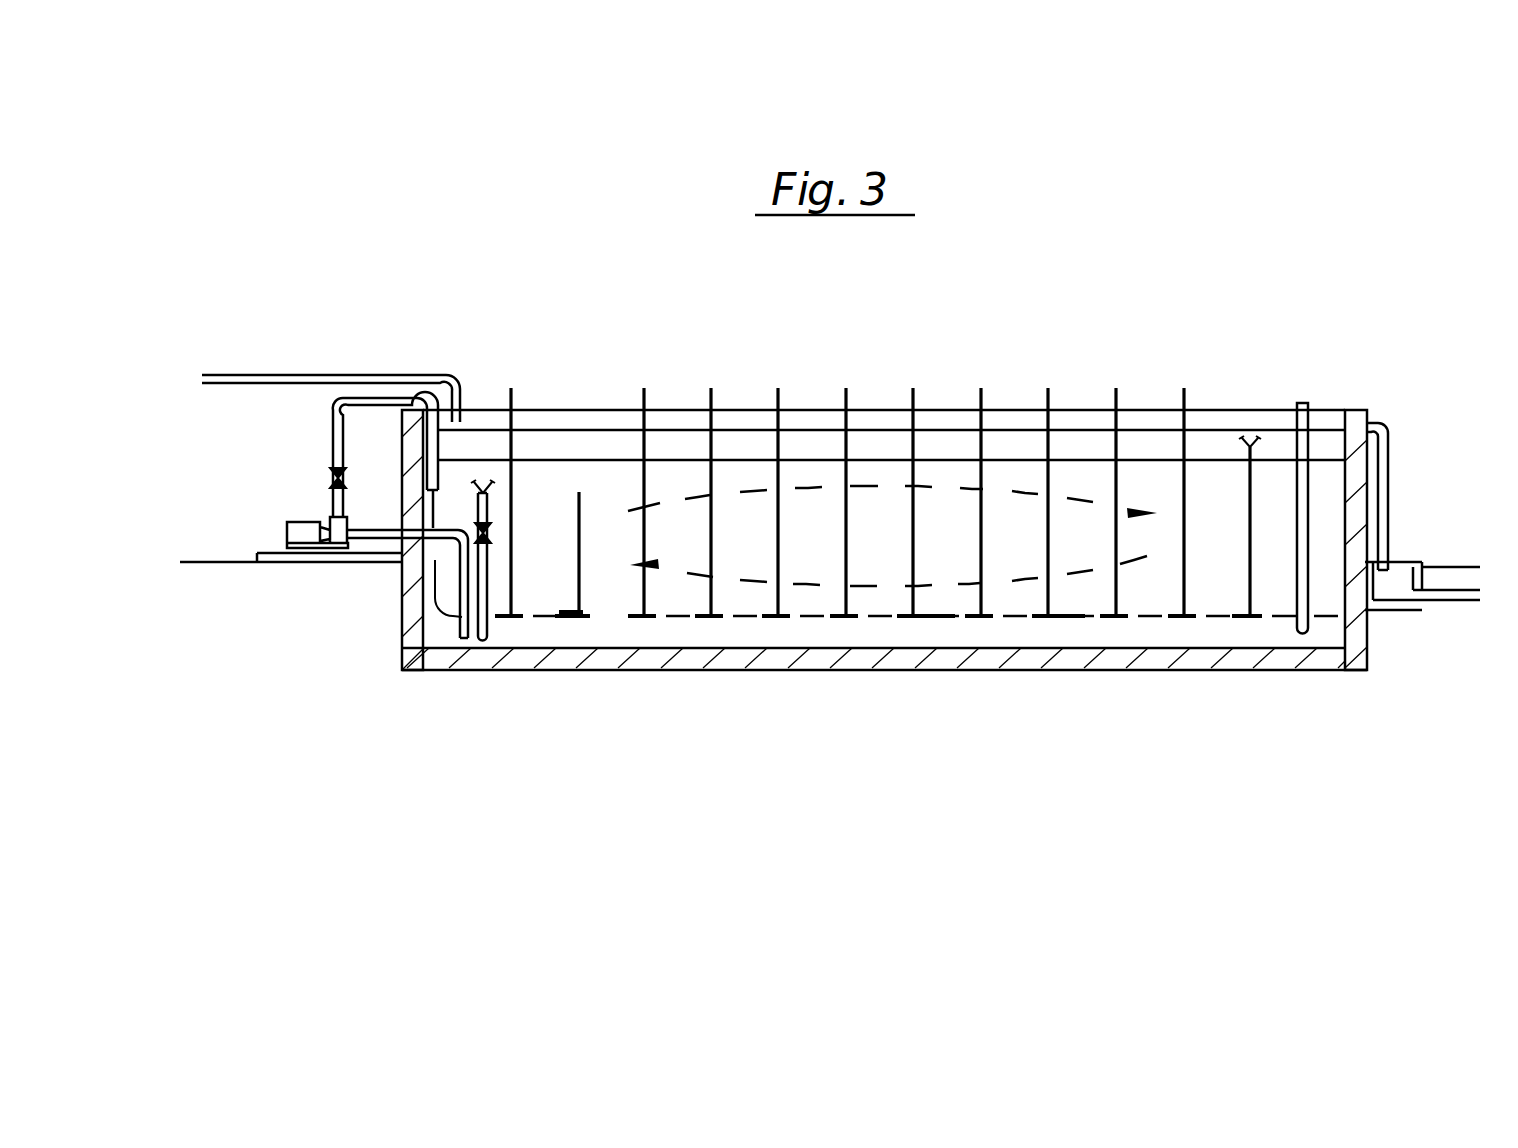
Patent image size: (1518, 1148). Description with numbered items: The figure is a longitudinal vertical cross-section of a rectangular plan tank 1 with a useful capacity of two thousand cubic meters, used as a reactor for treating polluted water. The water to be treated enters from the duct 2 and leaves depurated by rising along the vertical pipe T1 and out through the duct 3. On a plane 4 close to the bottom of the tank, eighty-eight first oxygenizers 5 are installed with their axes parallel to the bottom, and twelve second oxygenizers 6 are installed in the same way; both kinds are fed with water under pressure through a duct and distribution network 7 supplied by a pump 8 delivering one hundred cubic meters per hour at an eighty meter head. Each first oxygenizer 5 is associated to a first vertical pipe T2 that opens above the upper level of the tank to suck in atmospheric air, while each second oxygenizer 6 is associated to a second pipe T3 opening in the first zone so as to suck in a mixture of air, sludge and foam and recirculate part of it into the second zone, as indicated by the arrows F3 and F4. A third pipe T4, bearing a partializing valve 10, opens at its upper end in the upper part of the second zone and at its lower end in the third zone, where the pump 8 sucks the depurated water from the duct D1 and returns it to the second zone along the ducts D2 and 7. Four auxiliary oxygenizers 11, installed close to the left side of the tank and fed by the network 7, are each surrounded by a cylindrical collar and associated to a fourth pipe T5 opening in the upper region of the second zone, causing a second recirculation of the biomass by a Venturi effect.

The tank 1 is at (1000, 343).
The duct 2 is at (278, 373).
The duct 3 is at (1385, 457).
The plane 4 is at (1067, 617).
The first oxygenizers 5 is at (637, 617).
The second oxygenizers 6 is at (1247, 617).
The distribution network 7 is at (937, 617).
The pump 8 is at (298, 522).
The partializing valve 10 is at (478, 530).
The auxiliary oxygenizers 11 is at (570, 620).
The duct D1 is at (545, 670).
The duct D2 is at (337, 415).
The vertical pipe T1 is at (1302, 483).
The first vertical pipe T2 is at (648, 401).
The second pipe T3 is at (1250, 517).
The third pipe T4 is at (545, 670).
The fourth pipe T5 is at (577, 527).
The arrow F3 is at (893, 498).
The arrow F4 is at (871, 577).